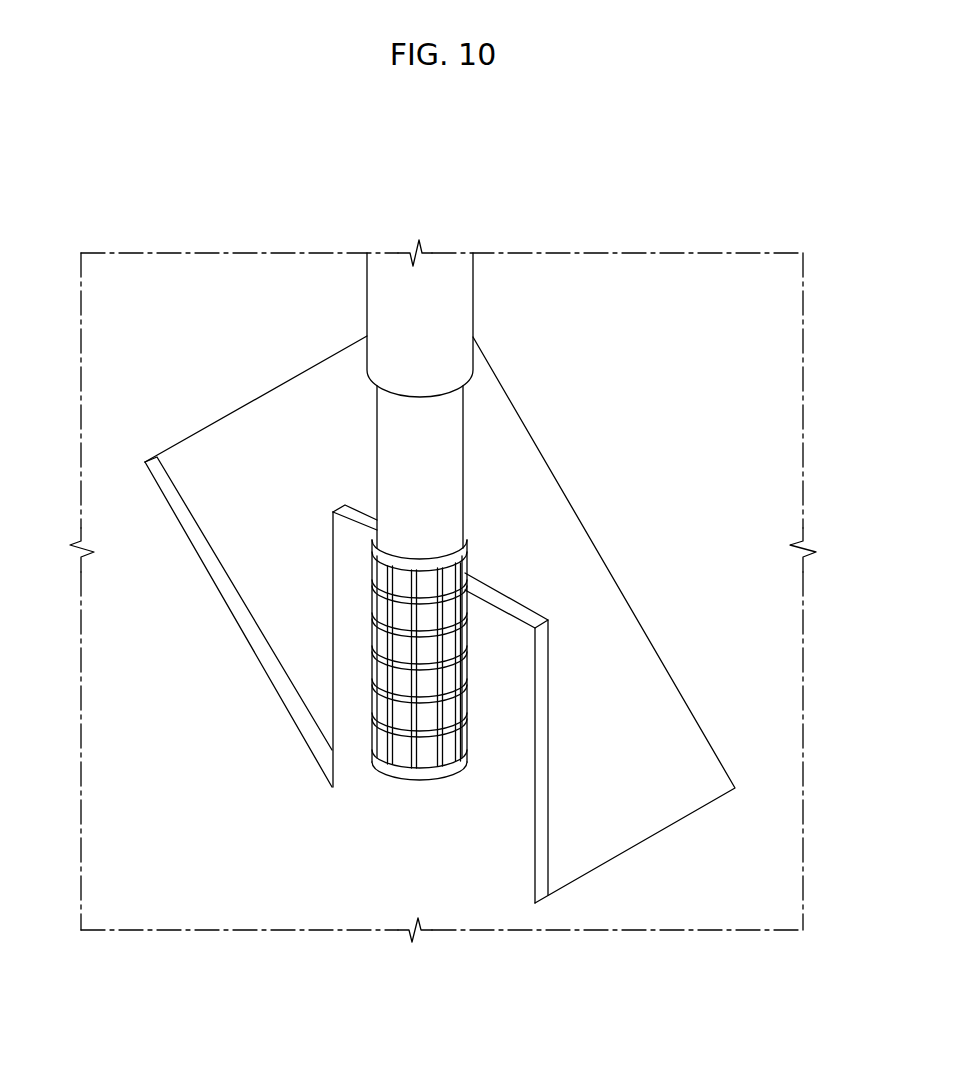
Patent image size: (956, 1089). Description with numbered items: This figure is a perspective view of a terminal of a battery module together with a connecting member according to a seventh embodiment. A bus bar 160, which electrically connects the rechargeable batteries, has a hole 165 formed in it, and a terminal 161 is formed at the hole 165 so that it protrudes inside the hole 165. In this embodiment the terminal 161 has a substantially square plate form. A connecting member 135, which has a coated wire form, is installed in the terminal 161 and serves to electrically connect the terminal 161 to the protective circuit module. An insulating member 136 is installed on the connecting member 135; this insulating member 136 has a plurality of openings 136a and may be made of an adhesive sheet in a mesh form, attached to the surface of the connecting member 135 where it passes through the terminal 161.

The connecting member 135 is at (450, 418).
The insulating member 136 is at (392, 767).
The openings 136a is at (410, 763).
The bus bar 160 is at (203, 875).
The terminal 161 is at (520, 753).
The hole 165 is at (717, 753).